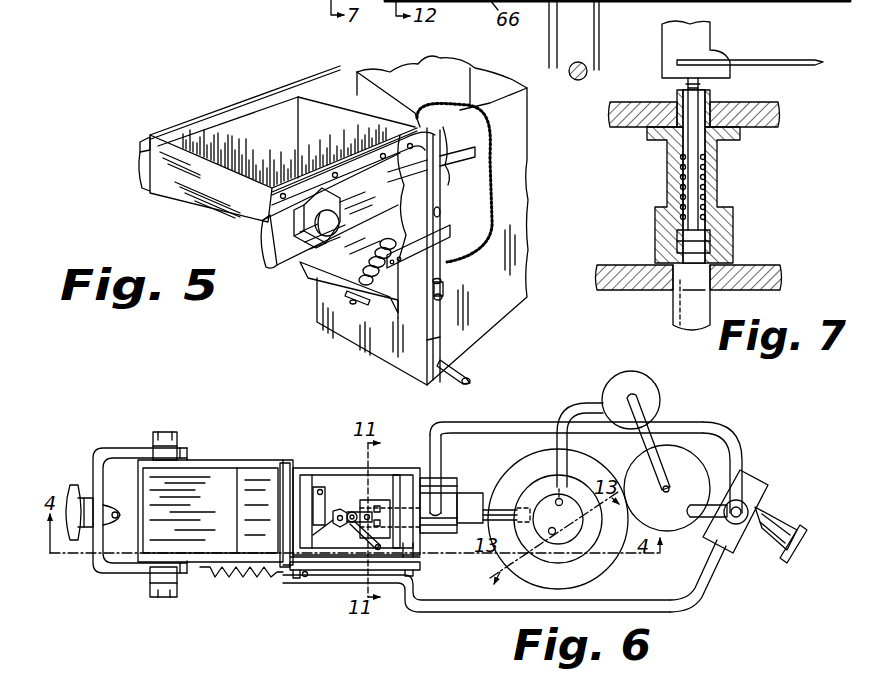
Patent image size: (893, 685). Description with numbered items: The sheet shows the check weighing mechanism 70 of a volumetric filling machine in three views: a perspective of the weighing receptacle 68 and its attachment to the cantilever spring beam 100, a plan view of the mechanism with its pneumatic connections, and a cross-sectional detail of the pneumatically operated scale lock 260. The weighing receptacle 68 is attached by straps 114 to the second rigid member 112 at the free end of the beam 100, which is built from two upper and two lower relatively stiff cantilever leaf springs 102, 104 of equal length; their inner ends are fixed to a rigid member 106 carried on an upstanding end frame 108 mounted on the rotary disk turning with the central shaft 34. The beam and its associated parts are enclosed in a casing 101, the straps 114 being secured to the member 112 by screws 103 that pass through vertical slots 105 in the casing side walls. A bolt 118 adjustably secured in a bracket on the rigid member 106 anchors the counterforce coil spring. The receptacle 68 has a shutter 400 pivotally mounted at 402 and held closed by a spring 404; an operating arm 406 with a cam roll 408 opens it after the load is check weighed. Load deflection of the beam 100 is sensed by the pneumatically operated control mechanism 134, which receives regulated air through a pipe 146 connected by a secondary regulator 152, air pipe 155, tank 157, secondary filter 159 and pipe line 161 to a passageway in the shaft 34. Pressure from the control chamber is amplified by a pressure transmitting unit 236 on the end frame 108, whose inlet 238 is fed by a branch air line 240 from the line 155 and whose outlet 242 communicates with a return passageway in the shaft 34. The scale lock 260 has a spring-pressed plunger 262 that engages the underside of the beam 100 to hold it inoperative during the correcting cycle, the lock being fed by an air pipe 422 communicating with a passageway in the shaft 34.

In FIG. 5, the weighing receptacle 68 is at (234, 125).
In FIG. 6, the weighing receptacle 68 is at (217, 477).
In FIG. 5, the straps 114 is at (318, 96).
In FIG. 6, the straps 114 is at (270, 460).
In FIG. 5, the operating arm 406 is at (138, 170).
In FIG. 6, the operating arm 406 is at (116, 450).
In FIG. 5, the casing 101 is at (525, 122).
In FIG. 6, the casing 101 is at (393, 468).
In FIG. 5, the upper cantilever leaf springs 102 is at (478, 147).
In FIG. 5, the screws 103 is at (442, 211).
In FIG. 5, the vertical slots 105 is at (444, 280).
In FIG. 5, the shutter 400 is at (357, 270).
In FIG. 5, the pivot 402 is at (320, 245).
In FIG. 5, the spring 404 is at (317, 280).
In FIG. 5, the air pipe 422 is at (468, 373).
In FIG. 6, the air pipe 422 is at (397, 578).
In FIG. 7, the bolt 118 is at (712, 33).
In FIG. 7, the lower cantilever leaf springs 104 is at (768, 60).
In FIG. 7, the pneumatically operated unit 260 is at (746, 192).
In FIG. 7, the spring-pressed plunger 262 is at (700, 98).
In FIG. 6, the cam roll 408 is at (72, 542).
In FIG. 6, the second rigid member 112 is at (307, 547).
In FIG. 6, the cantilever spring beam 100 is at (340, 466).
In FIG. 6, the check weighing mechanism 70 is at (291, 442).
In FIG. 6, the pneumatically operated control mechanism 134 is at (368, 500).
In FIG. 6, the inlet 238 is at (433, 450).
In FIG. 6, the end frame 108 is at (427, 477).
In FIG. 6, the pressure transmitting unit 236 is at (455, 492).
In FIG. 6, the rigid member 106 is at (407, 547).
In FIG. 6, the outlet 242 is at (505, 508).
In FIG. 6, the central shaft 34 is at (573, 536).
In FIG. 6, the pipe line 161 is at (573, 404).
In FIG. 6, the secondary filter 159 is at (660, 393).
In FIG. 6, the branch air line 240 is at (742, 447).
In FIG. 6, the pipe 146 is at (453, 608).
In FIG. 6, the tank 157 is at (694, 585).
In FIG. 6, the secondary regulator 152 is at (768, 487).
In FIG. 6, the air pipe 155 is at (773, 553).